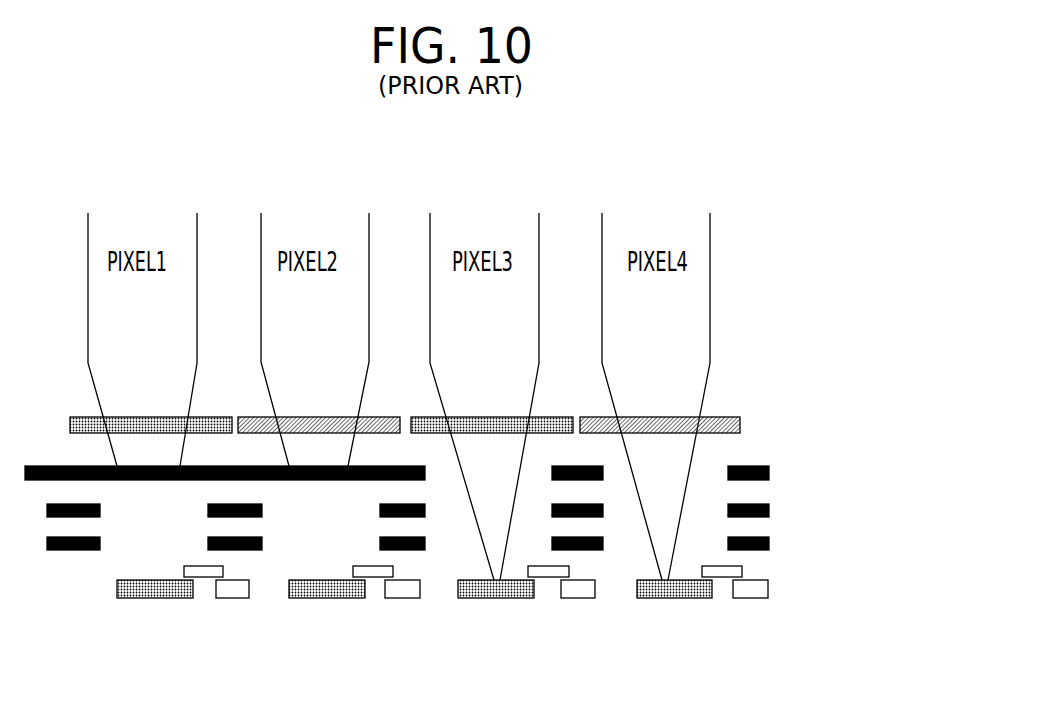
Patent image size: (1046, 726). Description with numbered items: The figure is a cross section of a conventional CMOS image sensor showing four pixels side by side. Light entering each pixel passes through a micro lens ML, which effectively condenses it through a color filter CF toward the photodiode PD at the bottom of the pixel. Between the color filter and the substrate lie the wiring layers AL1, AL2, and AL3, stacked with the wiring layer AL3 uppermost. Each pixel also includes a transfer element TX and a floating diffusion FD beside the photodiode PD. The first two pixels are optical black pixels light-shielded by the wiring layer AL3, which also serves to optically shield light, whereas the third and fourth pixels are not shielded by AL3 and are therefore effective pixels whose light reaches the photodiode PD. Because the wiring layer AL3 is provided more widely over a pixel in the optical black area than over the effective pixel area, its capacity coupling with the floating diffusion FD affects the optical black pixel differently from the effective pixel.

The micro lens ML is at (710, 360).
The color filter CF is at (740, 421).
The wiring layer AL3 is at (769, 473).
The wiring layer AL2 is at (769, 510).
The wiring layer AL1 is at (769, 543).
The transfer transistor TX is at (742, 569).
The floating diffusion FD is at (760, 598).
The photodiode PD is at (703, 598).